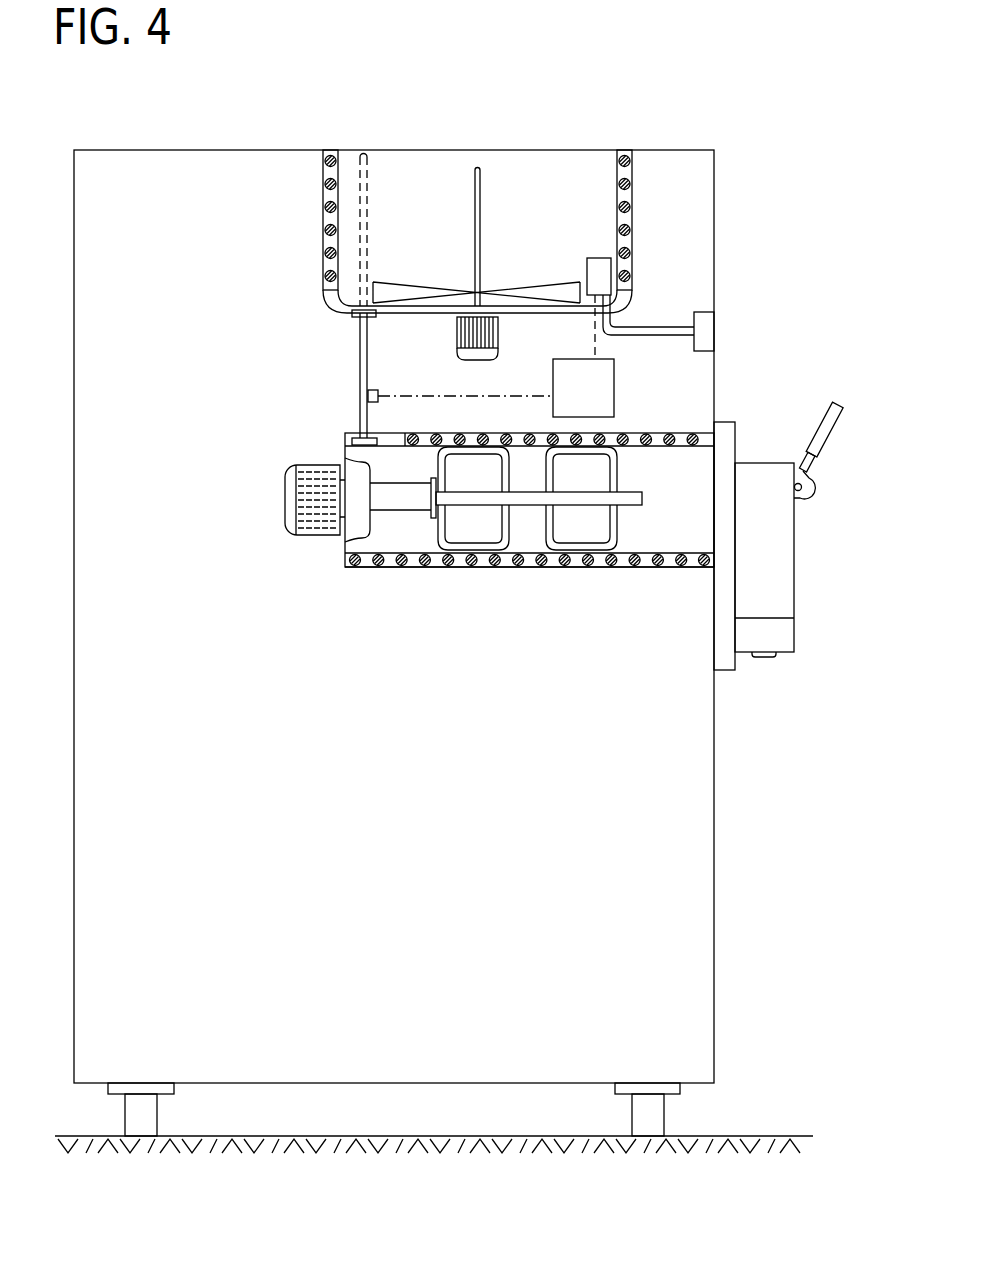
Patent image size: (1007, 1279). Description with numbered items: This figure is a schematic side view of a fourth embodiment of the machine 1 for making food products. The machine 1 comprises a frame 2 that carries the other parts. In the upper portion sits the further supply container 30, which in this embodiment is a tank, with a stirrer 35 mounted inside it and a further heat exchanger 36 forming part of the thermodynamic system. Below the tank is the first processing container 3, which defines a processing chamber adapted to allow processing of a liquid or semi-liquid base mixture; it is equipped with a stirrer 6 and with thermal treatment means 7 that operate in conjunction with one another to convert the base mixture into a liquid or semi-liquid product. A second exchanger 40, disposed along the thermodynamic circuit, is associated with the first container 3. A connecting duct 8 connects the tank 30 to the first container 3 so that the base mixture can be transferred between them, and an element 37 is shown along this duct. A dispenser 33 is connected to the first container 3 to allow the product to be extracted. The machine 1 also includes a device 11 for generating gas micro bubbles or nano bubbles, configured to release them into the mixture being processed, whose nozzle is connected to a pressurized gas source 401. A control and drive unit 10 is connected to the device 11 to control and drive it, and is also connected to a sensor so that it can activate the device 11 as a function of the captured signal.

The machine 1 is at (680, 109).
The frame 2 is at (722, 825).
The first processing container 3 is at (499, 557).
The stirrer 6 is at (634, 518).
The thermal treatment means 7 is at (540, 574).
The connecting duct 8 is at (355, 352).
The control and drive unit 10 is at (583, 388).
The device for generating gas micro bubbles or nano bubbles 11 is at (596, 250).
The further supply container 30 is at (560, 226).
The dispenser 33 is at (771, 438).
The stirrer 35 is at (518, 275).
The further heat exchanger 36 is at (640, 237).
The valve 37 is at (360, 398).
The second exchanger 40 is at (443, 578).
The pressurized gas source 401 is at (723, 318).